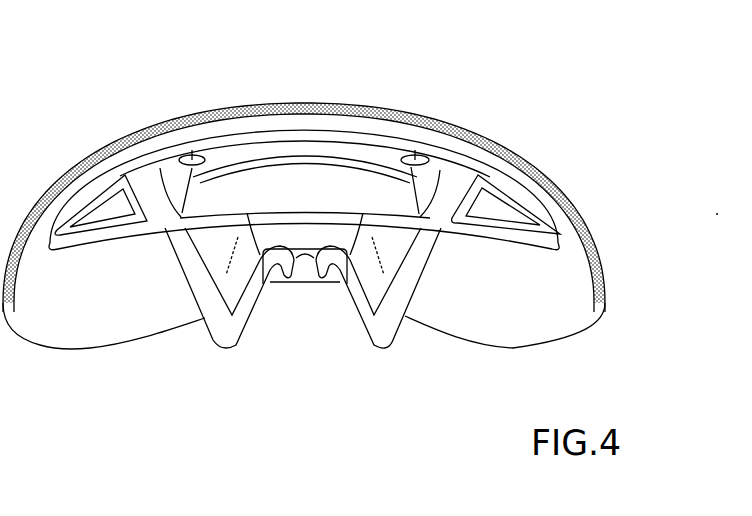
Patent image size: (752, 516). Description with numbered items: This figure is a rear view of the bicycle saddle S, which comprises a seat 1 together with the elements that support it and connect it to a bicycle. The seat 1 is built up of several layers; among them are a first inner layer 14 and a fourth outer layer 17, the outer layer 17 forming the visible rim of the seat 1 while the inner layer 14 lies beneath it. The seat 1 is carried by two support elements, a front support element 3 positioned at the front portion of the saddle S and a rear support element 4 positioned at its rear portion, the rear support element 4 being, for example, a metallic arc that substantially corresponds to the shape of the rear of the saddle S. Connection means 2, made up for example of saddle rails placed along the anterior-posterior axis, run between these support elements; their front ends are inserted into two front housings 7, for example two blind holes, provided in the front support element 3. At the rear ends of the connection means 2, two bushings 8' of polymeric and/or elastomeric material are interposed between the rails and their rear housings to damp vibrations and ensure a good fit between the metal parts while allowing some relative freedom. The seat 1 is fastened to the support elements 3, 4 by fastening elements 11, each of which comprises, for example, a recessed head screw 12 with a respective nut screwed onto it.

The seat 1 is at (359, 104).
The bicycle saddle S is at (549, 162).
The fourth outer layer 17 is at (253, 103).
The first inner layer 14 is at (79, 330).
The front support element 3 is at (282, 282).
The recessed head screw 12 is at (148, 132).
The fastening element 11 is at (184, 155).
The connection means 2 is at (202, 338).
The front housing 7 is at (278, 270).
The rear support element 4 is at (303, 262).
The bushing 8' is at (304, 160).